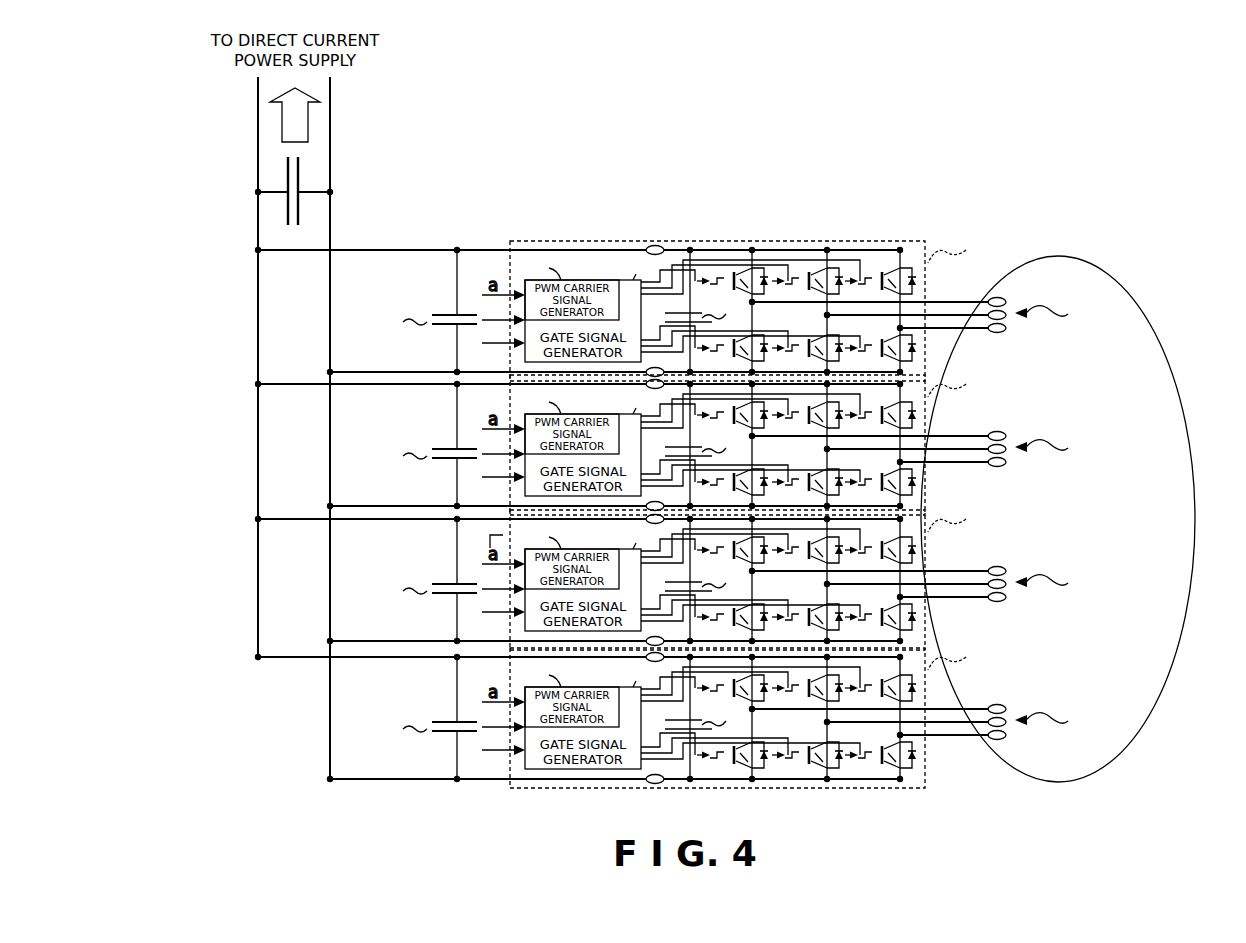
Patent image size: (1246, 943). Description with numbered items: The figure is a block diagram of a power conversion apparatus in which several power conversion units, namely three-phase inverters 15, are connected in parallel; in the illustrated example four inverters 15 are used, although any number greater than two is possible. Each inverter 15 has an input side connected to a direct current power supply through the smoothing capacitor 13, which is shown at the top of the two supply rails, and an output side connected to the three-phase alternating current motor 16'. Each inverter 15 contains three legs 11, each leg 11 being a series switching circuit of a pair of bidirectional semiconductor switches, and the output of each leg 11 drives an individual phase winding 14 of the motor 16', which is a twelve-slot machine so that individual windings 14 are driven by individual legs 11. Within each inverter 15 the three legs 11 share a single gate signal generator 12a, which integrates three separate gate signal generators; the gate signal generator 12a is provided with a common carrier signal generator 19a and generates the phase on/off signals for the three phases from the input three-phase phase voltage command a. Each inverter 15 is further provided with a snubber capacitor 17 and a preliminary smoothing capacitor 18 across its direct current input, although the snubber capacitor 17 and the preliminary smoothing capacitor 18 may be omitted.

The leg 11 is at (903, 236).
The gate signal generator 12a is at (587, 512).
The smoothing capacitor 13 is at (300, 168).
The phase windings 14 is at (920, 520).
The three-phase inverter 15 is at (750, 511).
The three-phase alternating current motor 16' is at (1071, 519).
The snubber capacitor 17 is at (707, 517).
The preliminary smoothing capacitor 18 is at (425, 524).
The common carrier signal generator 19a is at (567, 491).